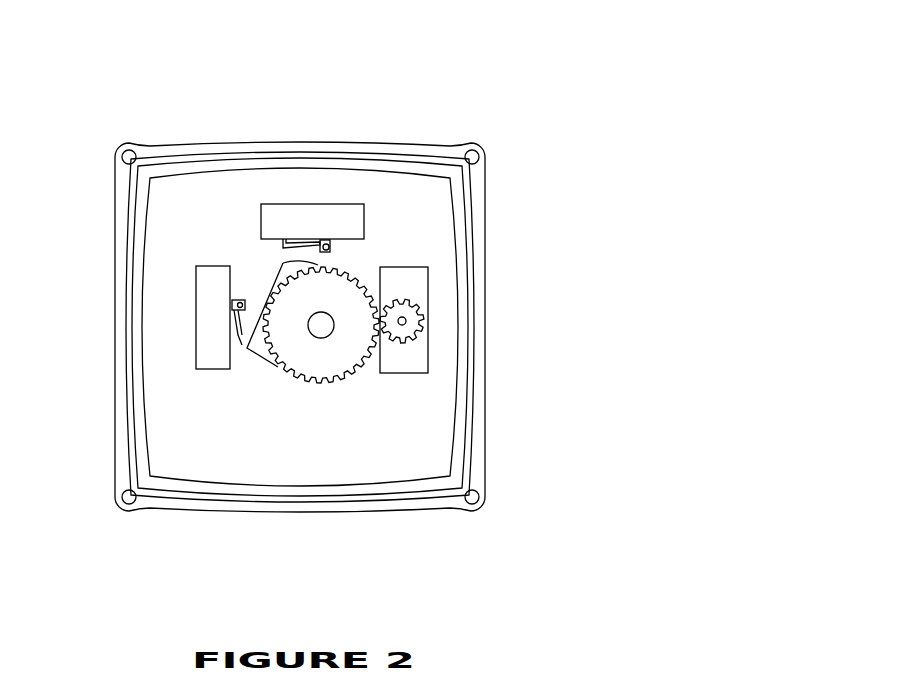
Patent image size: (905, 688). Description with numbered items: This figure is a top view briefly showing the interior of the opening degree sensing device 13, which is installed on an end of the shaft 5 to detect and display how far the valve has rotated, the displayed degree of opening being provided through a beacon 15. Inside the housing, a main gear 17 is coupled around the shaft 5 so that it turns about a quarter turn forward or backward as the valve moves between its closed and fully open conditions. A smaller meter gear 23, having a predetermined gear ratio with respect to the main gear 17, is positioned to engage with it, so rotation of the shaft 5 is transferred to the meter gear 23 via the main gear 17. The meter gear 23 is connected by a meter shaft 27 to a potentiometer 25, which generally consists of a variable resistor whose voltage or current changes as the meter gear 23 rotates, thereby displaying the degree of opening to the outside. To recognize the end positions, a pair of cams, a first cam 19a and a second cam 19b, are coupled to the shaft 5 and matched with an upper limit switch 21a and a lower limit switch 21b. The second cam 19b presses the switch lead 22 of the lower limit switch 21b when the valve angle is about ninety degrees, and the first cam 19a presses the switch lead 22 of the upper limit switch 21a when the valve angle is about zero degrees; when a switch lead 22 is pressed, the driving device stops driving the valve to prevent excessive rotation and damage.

The opening degree sensing device 13 is at (563, 29).
The beacon 15 is at (473, 215).
The main gear 17 is at (362, 343).
The shaft 5 is at (318, 330).
The first cam 19a is at (262, 352).
The second cam 19b is at (283, 263).
The upper limit switch 21a is at (212, 342).
The lower limit switch 21b is at (350, 218).
The switch lead 22 is at (242, 303).
The meter gear 23 is at (398, 340).
The potentiometer 25 is at (405, 273).
The meter shaft 27 is at (402, 321).